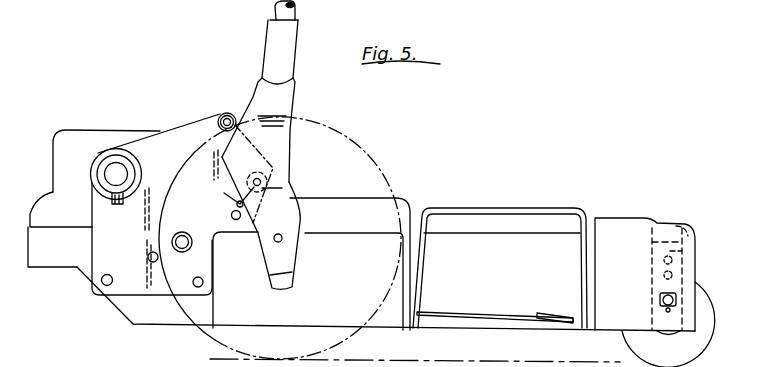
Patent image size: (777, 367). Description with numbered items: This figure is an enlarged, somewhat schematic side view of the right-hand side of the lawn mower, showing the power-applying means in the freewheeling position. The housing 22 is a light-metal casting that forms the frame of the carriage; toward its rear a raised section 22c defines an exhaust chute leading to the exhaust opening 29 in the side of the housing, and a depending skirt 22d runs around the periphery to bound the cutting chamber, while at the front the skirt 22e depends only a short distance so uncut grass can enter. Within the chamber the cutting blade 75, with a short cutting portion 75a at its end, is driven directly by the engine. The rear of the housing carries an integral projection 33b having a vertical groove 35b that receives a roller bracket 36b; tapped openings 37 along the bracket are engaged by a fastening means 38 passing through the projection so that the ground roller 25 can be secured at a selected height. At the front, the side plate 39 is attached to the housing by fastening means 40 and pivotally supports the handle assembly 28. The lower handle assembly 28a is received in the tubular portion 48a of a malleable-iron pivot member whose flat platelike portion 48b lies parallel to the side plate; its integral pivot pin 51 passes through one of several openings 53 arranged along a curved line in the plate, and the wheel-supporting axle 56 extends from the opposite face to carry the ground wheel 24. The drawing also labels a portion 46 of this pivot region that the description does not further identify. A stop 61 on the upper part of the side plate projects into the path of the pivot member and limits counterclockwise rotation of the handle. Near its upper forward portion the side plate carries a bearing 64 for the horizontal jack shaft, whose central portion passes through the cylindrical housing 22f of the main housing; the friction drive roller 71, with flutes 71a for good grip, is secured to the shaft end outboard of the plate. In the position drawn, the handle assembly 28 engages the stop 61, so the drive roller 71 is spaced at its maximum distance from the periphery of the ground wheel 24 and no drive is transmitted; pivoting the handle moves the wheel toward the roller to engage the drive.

The housing 22 is at (399, 198).
The raised section 22c is at (510, 207).
The depending skirt 22d is at (152, 312).
The depending skirt at front 22e is at (28, 270).
The cylindrical housing 22f is at (80, 131).
The ground wheel 24 is at (350, 133).
The ground roller 25 is at (693, 343).
The handle assembly 28 is at (268, 25).
The lower handle assembly 28a is at (296, 13).
The exhaust opening 29 is at (522, 272).
The projection 33b is at (617, 226).
The groove 35b is at (679, 226).
The roller bracket 36b is at (688, 247).
The tapped openings 37 is at (688, 268).
The fastening means 38 is at (660, 299).
The side plate 39 is at (185, 130).
The fastening means 40 is at (193, 282).
The lever arm 46 is at (280, 97).
The tubular portion 48a is at (295, 41).
The flat platelike portion 48b is at (283, 187).
The pivot pin 51 is at (262, 181).
The openings 53 is at (226, 196).
The wheel-supporting axle 56 is at (282, 241).
The stop 61 is at (225, 113).
The bearing 64 is at (102, 162).
The friction drive roller 71 is at (129, 174).
The flutes 71a is at (118, 205).
The cutting blade 75 is at (457, 312).
The cutting portion 75a is at (553, 314).